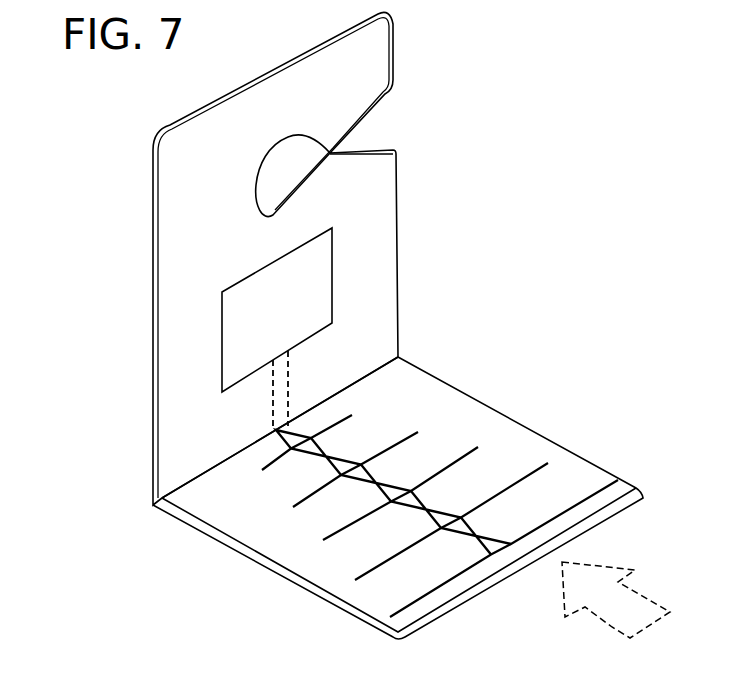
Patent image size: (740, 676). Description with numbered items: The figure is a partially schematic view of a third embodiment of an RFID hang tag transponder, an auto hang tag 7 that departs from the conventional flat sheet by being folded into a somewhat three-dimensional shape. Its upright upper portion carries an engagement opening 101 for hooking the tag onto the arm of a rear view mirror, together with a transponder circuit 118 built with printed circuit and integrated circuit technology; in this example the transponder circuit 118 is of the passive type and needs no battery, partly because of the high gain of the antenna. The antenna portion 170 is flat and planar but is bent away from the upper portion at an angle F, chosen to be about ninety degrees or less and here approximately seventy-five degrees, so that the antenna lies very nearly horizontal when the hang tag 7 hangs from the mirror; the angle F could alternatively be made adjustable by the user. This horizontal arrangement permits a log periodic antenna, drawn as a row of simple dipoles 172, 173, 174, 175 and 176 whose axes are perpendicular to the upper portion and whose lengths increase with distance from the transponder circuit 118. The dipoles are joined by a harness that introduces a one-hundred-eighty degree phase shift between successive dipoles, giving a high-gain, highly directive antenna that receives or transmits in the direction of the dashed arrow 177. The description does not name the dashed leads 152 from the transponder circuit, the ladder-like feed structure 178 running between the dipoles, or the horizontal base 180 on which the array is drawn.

The auto hang tag 7 is at (138, 153).
The engagement opening 101 is at (253, 177).
The transponder circuit 118 is at (281, 253).
The feed connection lines 152 is at (292, 374).
The antenna portion 170 is at (465, 577).
The dipole 172 is at (262, 468).
The dipole 173 is at (293, 505).
The dipole 174 is at (323, 538).
The dipole 175 is at (355, 578).
The dipole 176 is at (390, 615).
The arrow 177 is at (612, 628).
The antenna feed line 178 is at (304, 429).
The base portion 180 is at (428, 408).
The angle F is at (410, 303).